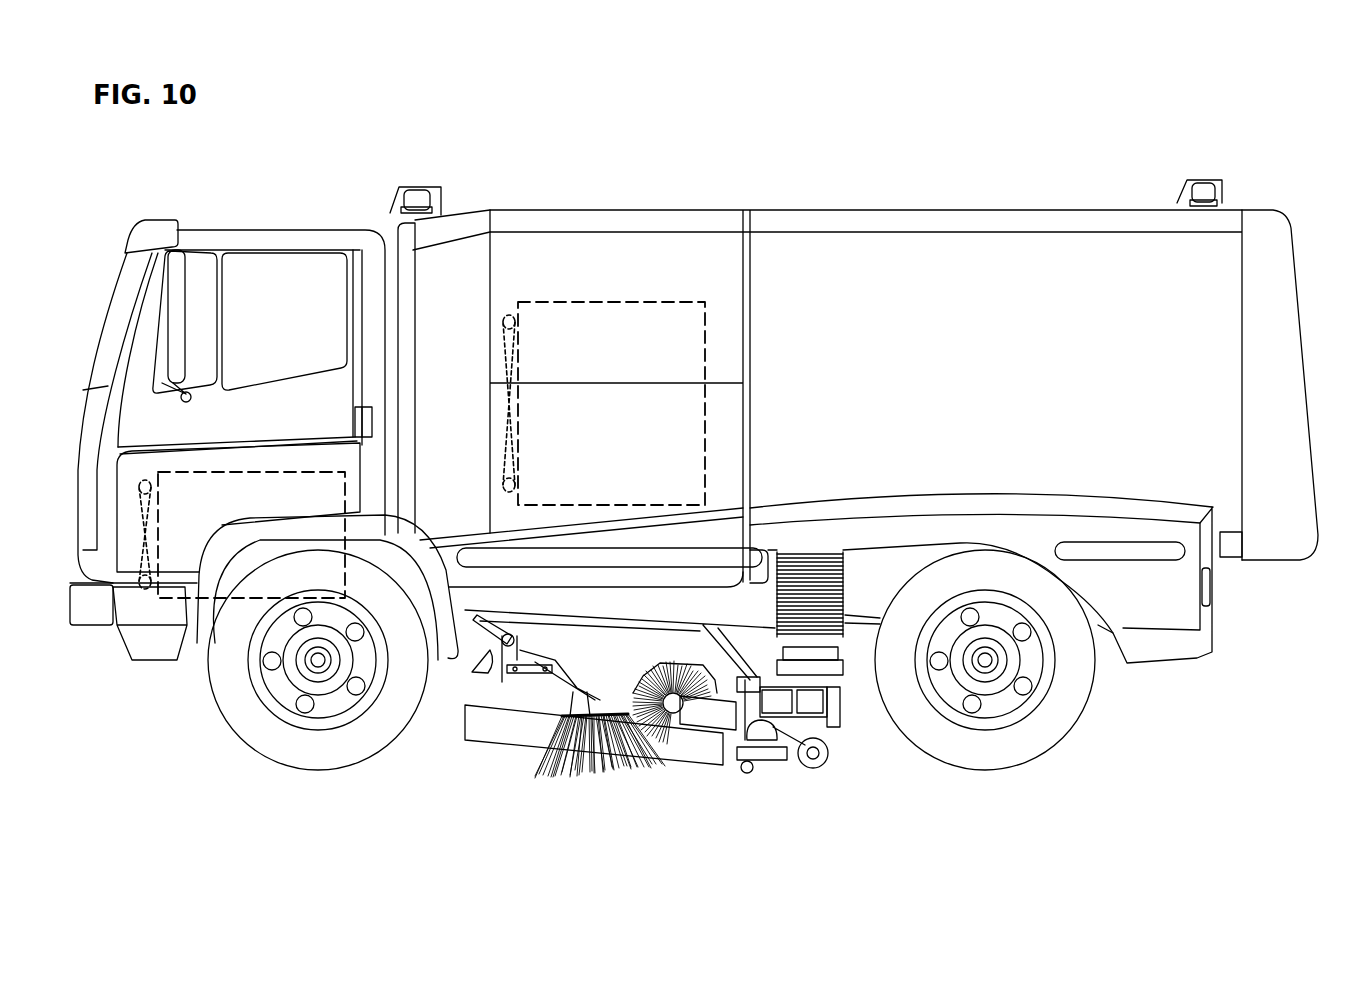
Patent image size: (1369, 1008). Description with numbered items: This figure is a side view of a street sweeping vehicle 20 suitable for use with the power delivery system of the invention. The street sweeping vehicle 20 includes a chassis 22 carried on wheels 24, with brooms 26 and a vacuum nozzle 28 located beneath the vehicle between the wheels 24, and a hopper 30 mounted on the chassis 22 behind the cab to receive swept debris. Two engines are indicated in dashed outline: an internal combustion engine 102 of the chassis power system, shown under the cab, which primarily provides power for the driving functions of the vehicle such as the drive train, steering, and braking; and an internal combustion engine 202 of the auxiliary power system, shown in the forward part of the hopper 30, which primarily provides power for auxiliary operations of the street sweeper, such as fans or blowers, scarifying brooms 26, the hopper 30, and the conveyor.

The street sweeping vehicle 20 is at (270, 230).
The chassis 22 is at (558, 602).
The wheels 24 is at (312, 767).
The brooms 26 is at (658, 683).
The vacuum nozzle 28 is at (762, 733).
The hopper 30 is at (995, 305).
The internal combustion engine 102 is at (172, 600).
The internal combustion engine 202 is at (625, 300).